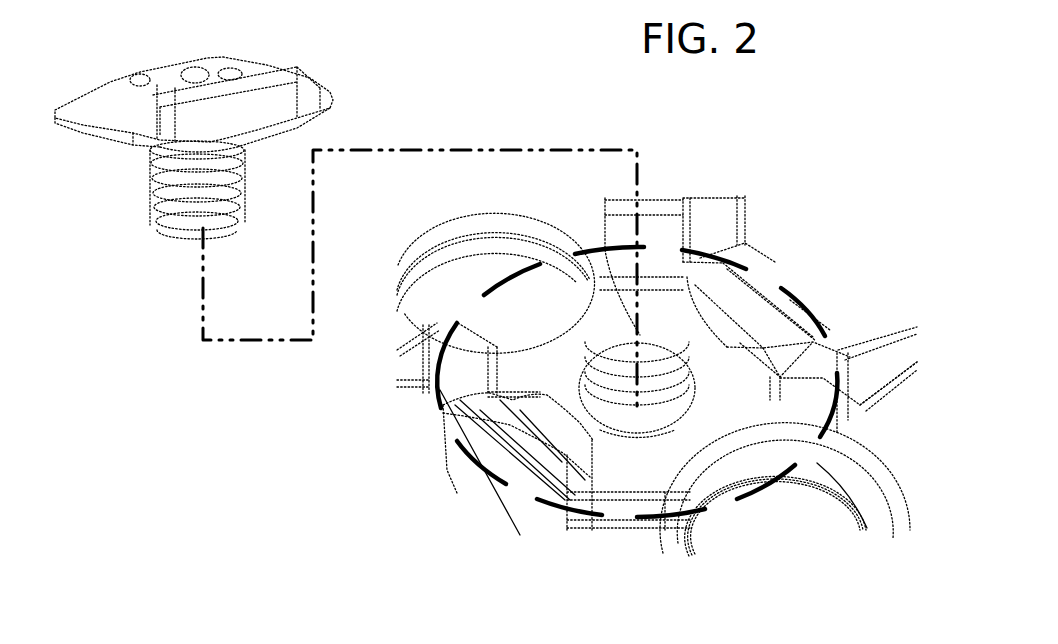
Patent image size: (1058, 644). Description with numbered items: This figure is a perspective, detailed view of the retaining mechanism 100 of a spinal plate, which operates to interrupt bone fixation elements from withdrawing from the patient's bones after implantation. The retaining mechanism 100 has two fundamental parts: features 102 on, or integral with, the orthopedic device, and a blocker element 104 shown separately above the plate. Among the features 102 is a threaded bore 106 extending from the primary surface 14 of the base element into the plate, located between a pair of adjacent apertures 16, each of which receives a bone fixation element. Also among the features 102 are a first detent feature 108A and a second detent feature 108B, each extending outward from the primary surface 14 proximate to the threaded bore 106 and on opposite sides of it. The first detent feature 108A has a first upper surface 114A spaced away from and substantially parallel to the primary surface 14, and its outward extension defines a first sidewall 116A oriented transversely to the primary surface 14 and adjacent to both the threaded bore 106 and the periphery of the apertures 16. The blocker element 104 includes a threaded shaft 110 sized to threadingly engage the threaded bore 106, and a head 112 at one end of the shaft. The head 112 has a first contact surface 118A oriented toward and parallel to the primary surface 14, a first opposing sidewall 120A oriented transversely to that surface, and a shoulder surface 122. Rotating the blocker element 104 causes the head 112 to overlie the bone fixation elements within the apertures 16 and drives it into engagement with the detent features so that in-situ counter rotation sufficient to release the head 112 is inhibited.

The retaining mechanism 100 is at (721, 92).
The features 102 is at (527, 272).
The blocker element 104 is at (207, 165).
The threaded bore 106 is at (613, 395).
The first detent feature 108A is at (773, 327).
The second detent feature 108B is at (505, 430).
The threaded shaft 110 is at (190, 193).
The head 112 is at (290, 62).
The first upper surface 114A is at (728, 319).
The first sidewall 116A is at (712, 342).
The first contact surface 118A is at (266, 124).
The first opposing sidewall 120A is at (260, 127).
The shoulder surface 122 is at (197, 145).
The primary surface 14 is at (862, 453).
The apertures 16 is at (478, 321).